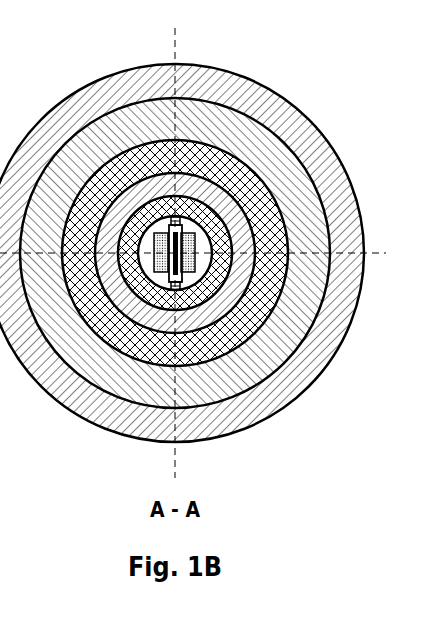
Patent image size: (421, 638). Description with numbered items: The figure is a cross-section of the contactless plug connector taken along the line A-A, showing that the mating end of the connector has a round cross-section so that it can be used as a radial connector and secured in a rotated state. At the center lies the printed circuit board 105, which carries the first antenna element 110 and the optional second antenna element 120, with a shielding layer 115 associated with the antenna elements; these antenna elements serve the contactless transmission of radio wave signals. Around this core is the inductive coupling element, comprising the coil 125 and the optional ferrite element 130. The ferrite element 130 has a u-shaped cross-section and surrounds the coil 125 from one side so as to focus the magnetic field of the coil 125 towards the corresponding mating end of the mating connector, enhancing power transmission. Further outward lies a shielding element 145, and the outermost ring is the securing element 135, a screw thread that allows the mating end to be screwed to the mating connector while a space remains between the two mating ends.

The printed circuit board 105 is at (176, 283).
The first antenna element 110 is at (156, 273).
The shielding layer 115 is at (174, 288).
The second antenna element 120 is at (245, 294).
The coil 125 is at (230, 287).
The ferrite element 130 is at (257, 192).
The securing element 135 is at (207, 80).
The shielding element 145 is at (277, 157).